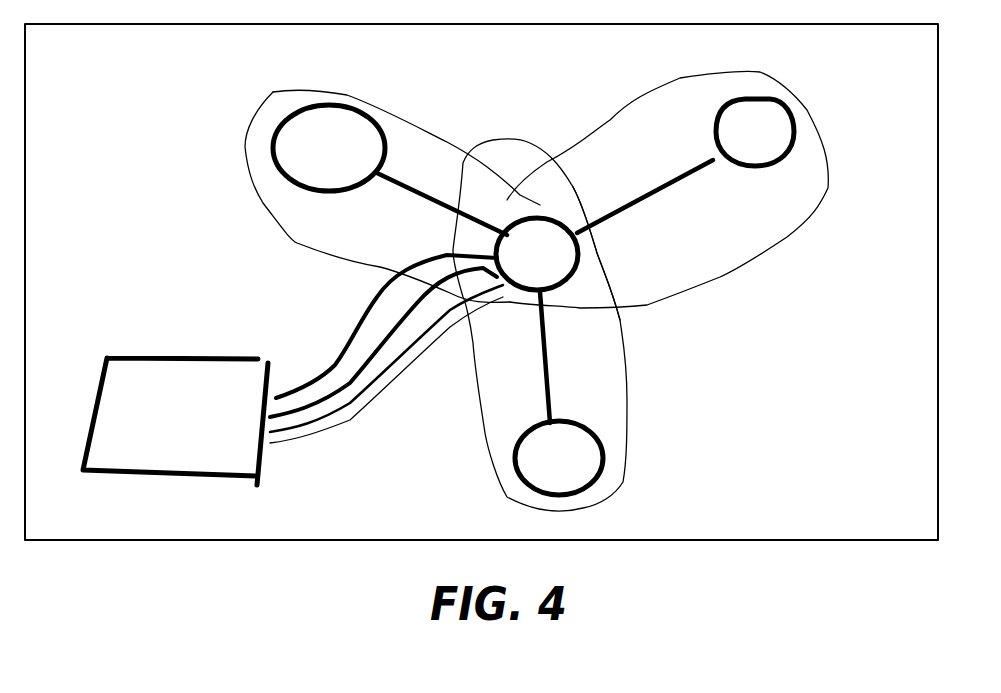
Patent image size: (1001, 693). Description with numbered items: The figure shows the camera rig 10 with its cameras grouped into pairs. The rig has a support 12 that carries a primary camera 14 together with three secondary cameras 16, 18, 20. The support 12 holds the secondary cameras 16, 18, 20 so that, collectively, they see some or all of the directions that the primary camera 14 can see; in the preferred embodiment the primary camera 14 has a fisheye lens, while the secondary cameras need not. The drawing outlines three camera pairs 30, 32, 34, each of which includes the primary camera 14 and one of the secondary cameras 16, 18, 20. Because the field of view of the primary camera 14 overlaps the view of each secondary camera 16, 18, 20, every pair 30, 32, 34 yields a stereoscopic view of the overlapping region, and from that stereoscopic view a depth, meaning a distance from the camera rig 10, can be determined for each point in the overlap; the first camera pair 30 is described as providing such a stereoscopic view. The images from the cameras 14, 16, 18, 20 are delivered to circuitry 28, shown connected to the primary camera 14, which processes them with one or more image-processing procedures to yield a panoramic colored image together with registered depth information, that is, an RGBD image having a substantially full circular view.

The camera rig 10 is at (884, 104).
The support 12 is at (610, 217).
The primary camera 14 is at (519, 264).
The secondary camera 16 is at (542, 471).
The secondary camera 18 is at (315, 162).
The secondary camera 20 is at (739, 151).
The circuitry 28 is at (147, 434).
The first camera pair 30 is at (574, 392).
The camera pair 32 is at (367, 241).
The camera pair 34 is at (737, 231).